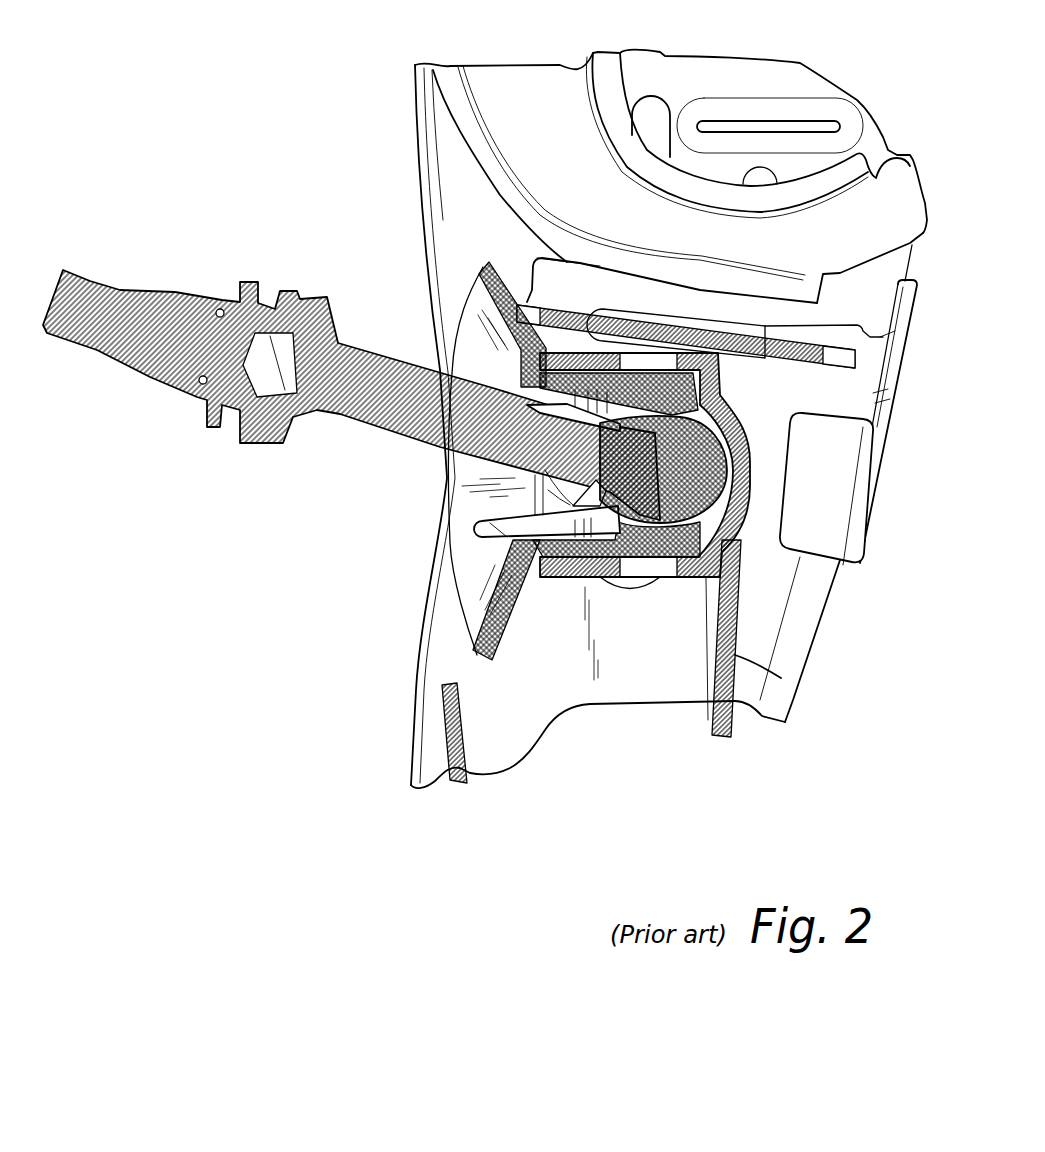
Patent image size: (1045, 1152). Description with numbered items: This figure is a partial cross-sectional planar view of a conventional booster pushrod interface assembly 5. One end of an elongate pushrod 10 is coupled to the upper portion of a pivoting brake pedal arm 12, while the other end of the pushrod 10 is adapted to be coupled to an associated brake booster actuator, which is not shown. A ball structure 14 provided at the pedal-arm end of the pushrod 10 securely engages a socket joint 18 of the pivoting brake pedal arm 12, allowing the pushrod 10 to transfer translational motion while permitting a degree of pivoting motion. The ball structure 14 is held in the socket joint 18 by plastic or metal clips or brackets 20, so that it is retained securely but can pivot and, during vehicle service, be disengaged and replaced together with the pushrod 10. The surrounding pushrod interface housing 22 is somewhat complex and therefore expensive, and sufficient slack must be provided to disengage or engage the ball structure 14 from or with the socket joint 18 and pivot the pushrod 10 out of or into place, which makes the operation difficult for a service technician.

The booster pushrod interface assembly 5 is at (572, 290).
The pushrod 10 is at (372, 348).
The pivoting brake pedal arm 12 is at (663, 680).
The ball structure 14 is at (690, 478).
The socket joint 18 is at (563, 606).
The clips or brackets 20 is at (495, 556).
The pushrod interface housing 22 is at (752, 405).